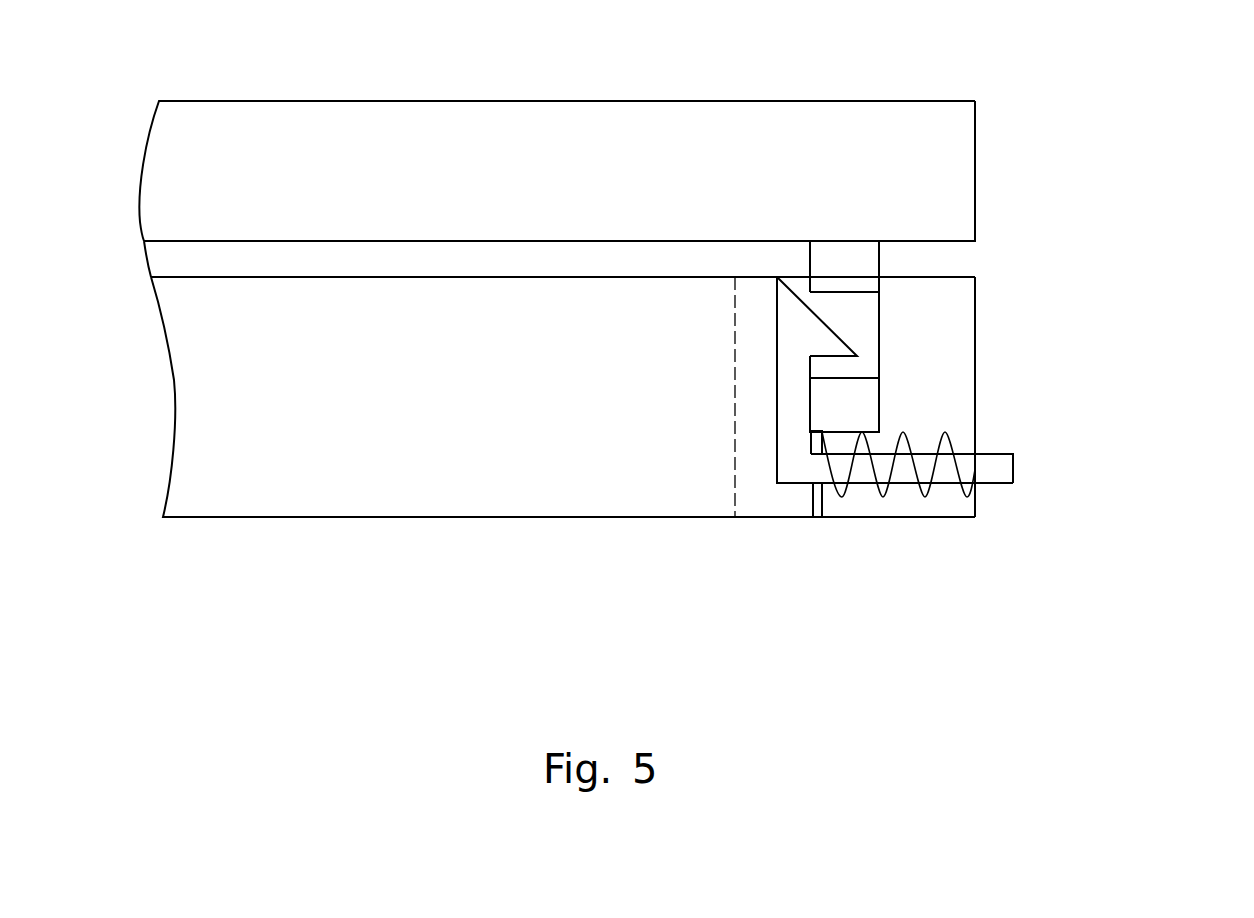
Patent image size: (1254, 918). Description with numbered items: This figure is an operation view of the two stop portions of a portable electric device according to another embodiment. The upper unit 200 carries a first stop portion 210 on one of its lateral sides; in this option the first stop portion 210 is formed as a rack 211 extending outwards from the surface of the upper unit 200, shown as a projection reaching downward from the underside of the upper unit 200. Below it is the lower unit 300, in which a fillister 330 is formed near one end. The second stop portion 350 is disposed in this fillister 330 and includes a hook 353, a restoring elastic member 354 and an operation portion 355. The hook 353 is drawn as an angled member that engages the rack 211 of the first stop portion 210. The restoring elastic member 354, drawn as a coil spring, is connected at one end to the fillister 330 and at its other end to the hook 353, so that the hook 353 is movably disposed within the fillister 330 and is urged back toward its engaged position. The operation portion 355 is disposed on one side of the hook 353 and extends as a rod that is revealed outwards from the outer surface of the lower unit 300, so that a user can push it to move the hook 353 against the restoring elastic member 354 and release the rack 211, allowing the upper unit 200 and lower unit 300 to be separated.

The upper unit 200 is at (978, 170).
The first stop portion 210 is at (882, 260).
The rack 211 is at (838, 255).
The lower unit 300 is at (478, 522).
The fillister 330 is at (768, 500).
The second stop portion 350 is at (1135, 303).
The hook 353 is at (815, 335).
The restoring elastic member 354 is at (925, 497).
The operation portion 355 is at (1013, 467).